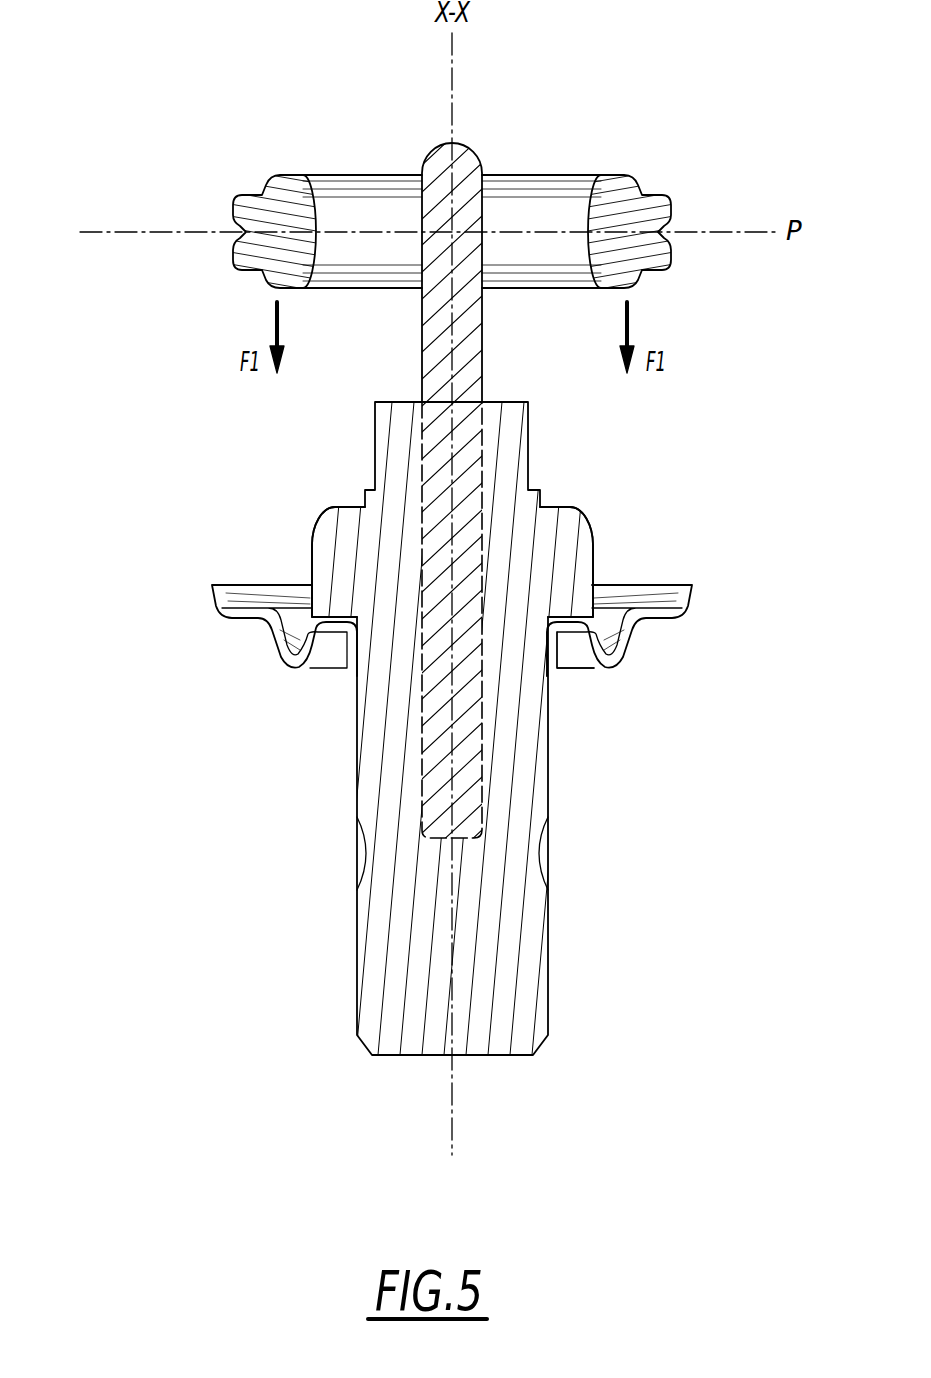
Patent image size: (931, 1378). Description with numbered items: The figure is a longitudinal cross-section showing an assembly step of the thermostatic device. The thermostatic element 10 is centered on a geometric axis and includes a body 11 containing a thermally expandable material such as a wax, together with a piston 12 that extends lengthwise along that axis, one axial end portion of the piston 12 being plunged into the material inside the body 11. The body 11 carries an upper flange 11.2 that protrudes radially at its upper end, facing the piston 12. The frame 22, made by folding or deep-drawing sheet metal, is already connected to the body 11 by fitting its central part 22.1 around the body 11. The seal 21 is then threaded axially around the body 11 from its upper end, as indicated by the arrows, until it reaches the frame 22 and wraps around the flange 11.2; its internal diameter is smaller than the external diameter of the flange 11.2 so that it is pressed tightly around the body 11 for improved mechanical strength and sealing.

The thermostatic element 10 is at (350, 1016).
The body 11 is at (373, 762).
The upper flange 11.2 is at (578, 566).
The piston 12 is at (472, 148).
The seal 21 is at (260, 186).
The frame 22 is at (208, 605).
The central part 22.1 is at (550, 660).